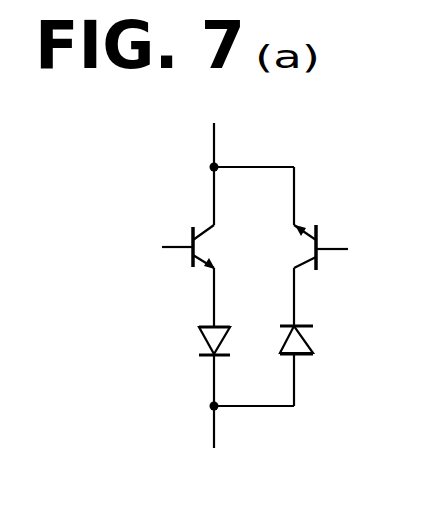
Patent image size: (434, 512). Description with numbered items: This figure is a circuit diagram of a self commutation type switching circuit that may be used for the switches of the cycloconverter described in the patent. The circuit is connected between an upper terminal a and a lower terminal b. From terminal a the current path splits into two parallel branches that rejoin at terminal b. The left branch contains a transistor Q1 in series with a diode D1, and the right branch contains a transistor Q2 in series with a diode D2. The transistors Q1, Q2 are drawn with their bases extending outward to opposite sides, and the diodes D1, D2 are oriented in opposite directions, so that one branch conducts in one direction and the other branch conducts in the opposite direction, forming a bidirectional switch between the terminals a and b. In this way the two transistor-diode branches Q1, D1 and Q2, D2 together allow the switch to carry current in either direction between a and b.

The NPN transistor Q1 is at (177, 240).
The PNP transistor Q2 is at (328, 240).
The diode D1 is at (192, 342).
The diode D2 is at (317, 342).
The terminal a is at (212, 131).
The terminal b is at (214, 442).